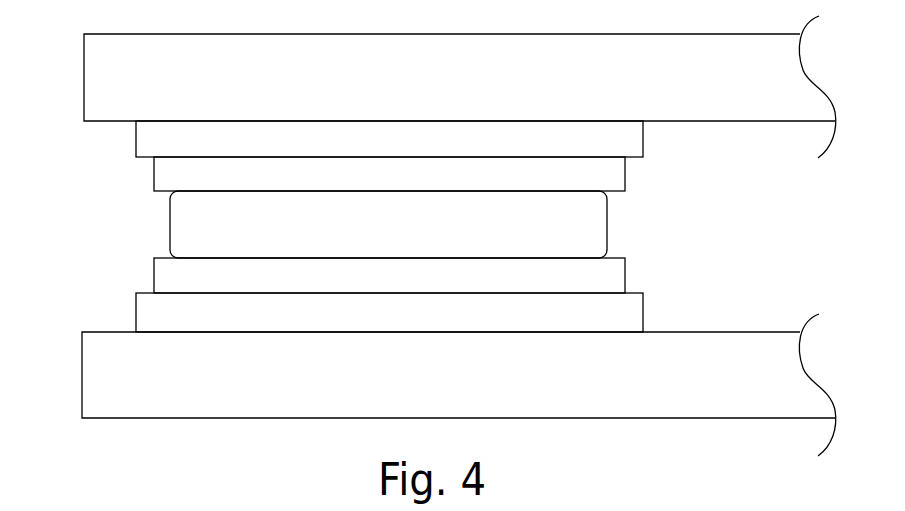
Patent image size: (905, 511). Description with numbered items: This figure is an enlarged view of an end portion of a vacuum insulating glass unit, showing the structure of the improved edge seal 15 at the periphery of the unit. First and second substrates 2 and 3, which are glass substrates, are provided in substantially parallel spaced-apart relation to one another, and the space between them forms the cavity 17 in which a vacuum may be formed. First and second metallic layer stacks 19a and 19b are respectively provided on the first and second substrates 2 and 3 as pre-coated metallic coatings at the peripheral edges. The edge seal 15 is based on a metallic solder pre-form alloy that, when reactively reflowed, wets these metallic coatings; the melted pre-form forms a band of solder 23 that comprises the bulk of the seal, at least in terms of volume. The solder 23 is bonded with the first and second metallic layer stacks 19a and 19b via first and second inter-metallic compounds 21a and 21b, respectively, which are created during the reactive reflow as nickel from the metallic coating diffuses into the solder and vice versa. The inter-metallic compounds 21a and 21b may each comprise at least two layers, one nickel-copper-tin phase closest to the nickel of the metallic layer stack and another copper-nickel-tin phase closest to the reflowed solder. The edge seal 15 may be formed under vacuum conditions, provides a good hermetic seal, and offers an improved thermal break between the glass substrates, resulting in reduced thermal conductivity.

The first substrate 2 is at (82, 372).
The second substrate 3 is at (84, 78).
The edge seal 15 is at (334, 226).
The cavity 17 is at (740, 243).
The first metallic layer stack 19a is at (354, 310).
The second metallic layer stack 19b is at (136, 135).
The first inter-metallic compound 21a is at (154, 277).
The second inter-metallic compound 21b is at (154, 172).
The solder 23 is at (170, 225).